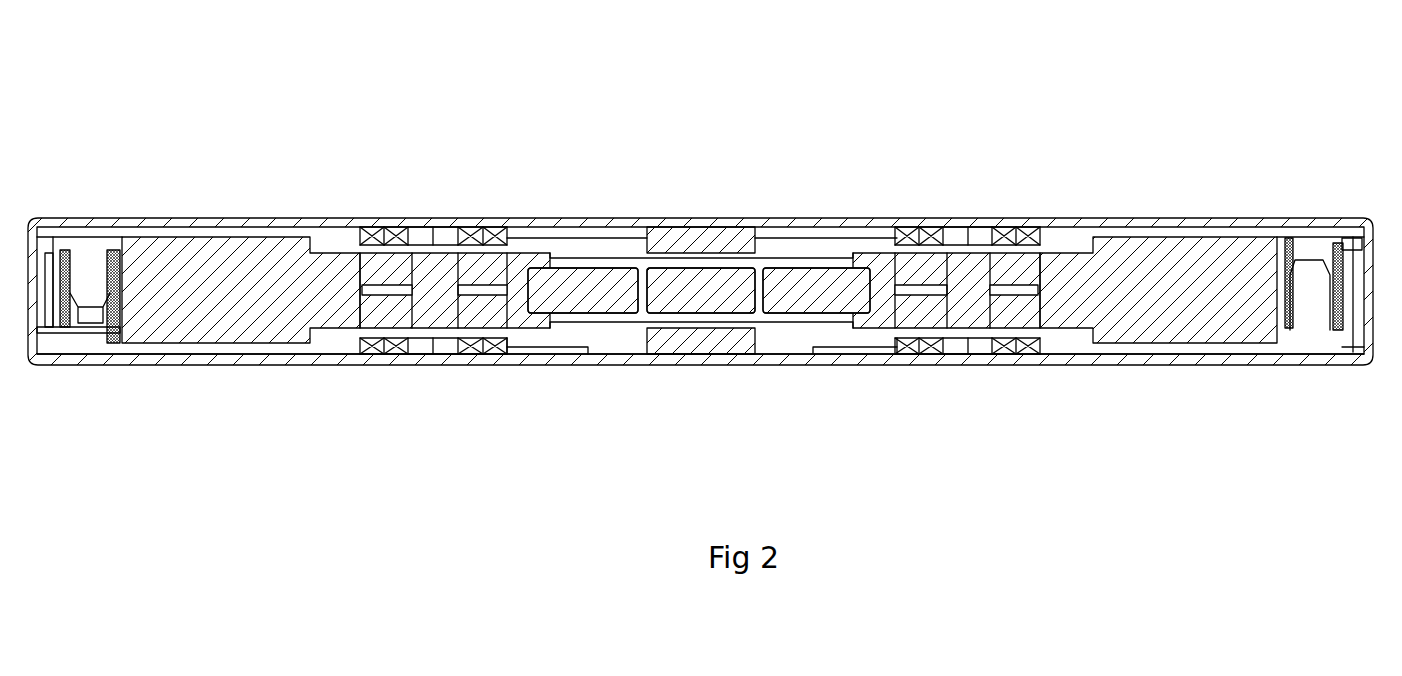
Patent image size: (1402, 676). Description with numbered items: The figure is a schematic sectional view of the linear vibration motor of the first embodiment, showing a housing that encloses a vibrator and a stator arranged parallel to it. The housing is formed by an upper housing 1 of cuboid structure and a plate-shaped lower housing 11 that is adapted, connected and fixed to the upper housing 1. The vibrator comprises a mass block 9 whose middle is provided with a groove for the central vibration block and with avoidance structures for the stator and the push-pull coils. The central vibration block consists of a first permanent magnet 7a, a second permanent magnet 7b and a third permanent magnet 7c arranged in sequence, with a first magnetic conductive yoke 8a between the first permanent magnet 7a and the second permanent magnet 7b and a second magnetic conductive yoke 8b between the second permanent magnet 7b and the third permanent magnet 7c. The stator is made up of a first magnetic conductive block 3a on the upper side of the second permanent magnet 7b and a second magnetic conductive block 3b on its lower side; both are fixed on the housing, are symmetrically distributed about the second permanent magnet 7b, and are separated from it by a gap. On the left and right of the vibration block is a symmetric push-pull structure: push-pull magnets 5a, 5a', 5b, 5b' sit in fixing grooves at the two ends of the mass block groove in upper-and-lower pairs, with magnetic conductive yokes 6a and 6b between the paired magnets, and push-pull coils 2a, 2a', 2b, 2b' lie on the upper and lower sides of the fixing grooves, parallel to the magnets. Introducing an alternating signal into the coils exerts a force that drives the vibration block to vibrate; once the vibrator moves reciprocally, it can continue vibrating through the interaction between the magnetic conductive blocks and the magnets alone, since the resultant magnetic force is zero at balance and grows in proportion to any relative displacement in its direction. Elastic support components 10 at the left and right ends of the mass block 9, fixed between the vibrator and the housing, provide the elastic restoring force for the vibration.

The upper housing 1 is at (1155, 218).
The lower housing 11 is at (1160, 365).
The elastic support component 10 is at (65, 237).
The mass block 9 is at (188, 250).
The push-pull coil 2a is at (946, 189).
The push-pull coil 2a' is at (946, 409).
The push-pull coil 2b is at (491, 187).
The push-pull coil 2b' is at (510, 411).
The first magnetic conductive block 3a is at (690, 268).
The second magnetic conductive block 3b is at (695, 354).
The push-pull magnet 5a is at (978, 156).
The push-pull magnet 5a' is at (997, 405).
The push-pull magnet 5b is at (433, 154).
The push-pull magnet 5b' is at (433, 413).
The magnetic conductive yoke 6a is at (1035, 268).
The magnetic conductive yoke 6b is at (408, 262).
The first permanent magnet 7a is at (575, 262).
The second permanent magnet 7b is at (722, 262).
The third permanent magnet 7c is at (816, 268).
The first magnetic conductive yoke 8a is at (645, 354).
The second magnetic conductive yoke 8b is at (763, 315).